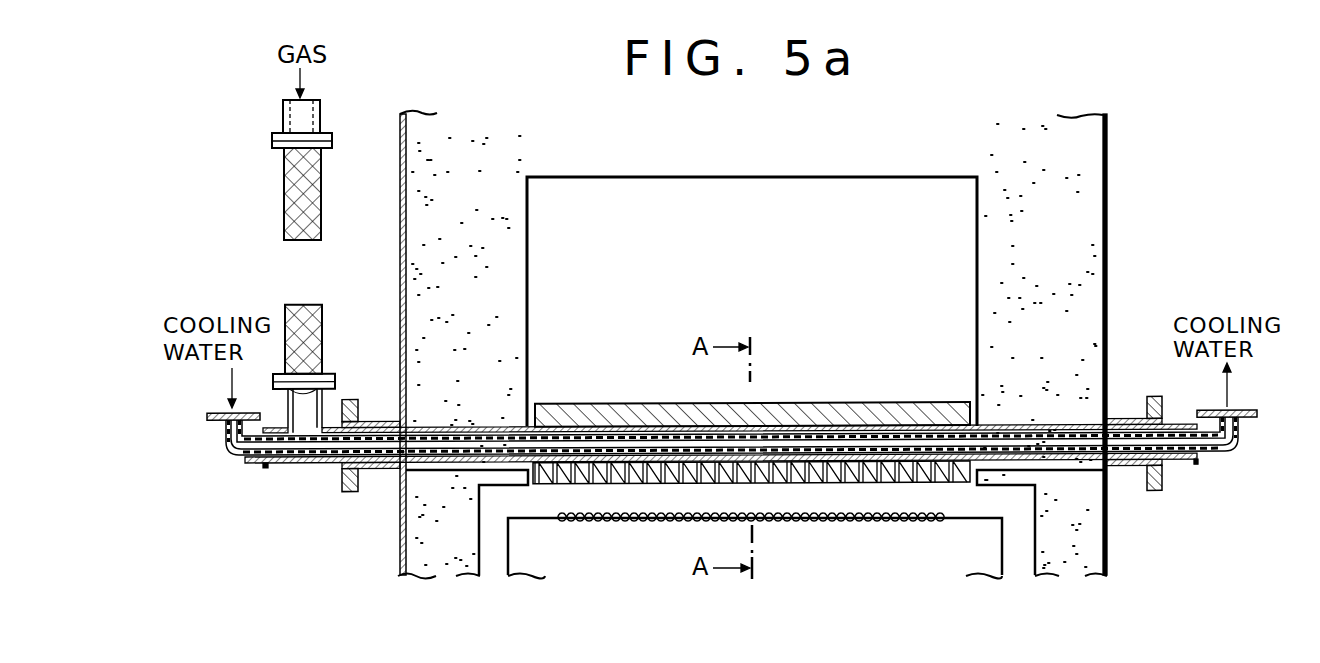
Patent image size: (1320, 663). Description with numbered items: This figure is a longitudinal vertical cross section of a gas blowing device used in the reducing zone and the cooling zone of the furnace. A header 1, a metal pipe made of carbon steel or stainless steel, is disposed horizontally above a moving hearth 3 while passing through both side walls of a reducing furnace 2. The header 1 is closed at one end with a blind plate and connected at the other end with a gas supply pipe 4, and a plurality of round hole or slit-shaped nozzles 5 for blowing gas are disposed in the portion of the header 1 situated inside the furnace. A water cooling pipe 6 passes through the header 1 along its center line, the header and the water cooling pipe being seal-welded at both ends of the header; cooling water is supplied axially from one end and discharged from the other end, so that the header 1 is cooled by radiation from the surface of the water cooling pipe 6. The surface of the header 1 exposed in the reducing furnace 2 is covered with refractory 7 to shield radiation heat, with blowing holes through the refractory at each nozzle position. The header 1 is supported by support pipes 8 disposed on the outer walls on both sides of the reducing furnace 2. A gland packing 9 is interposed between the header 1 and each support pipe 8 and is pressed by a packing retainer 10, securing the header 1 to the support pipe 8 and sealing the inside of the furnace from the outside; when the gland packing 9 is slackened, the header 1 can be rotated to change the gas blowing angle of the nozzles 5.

The header 1 is at (332, 465).
The reducing furnace 2 is at (1105, 207).
The moving hearth 3 is at (507, 540).
The gas supply pipe 4 is at (288, 410).
The nozzles 5 is at (963, 484).
The water cooling pipe 6 is at (258, 457).
The refractory 7 is at (582, 404).
The support pipes 8 is at (390, 473).
The gland packing 9 is at (387, 420).
The packing retainer 10 is at (345, 398).